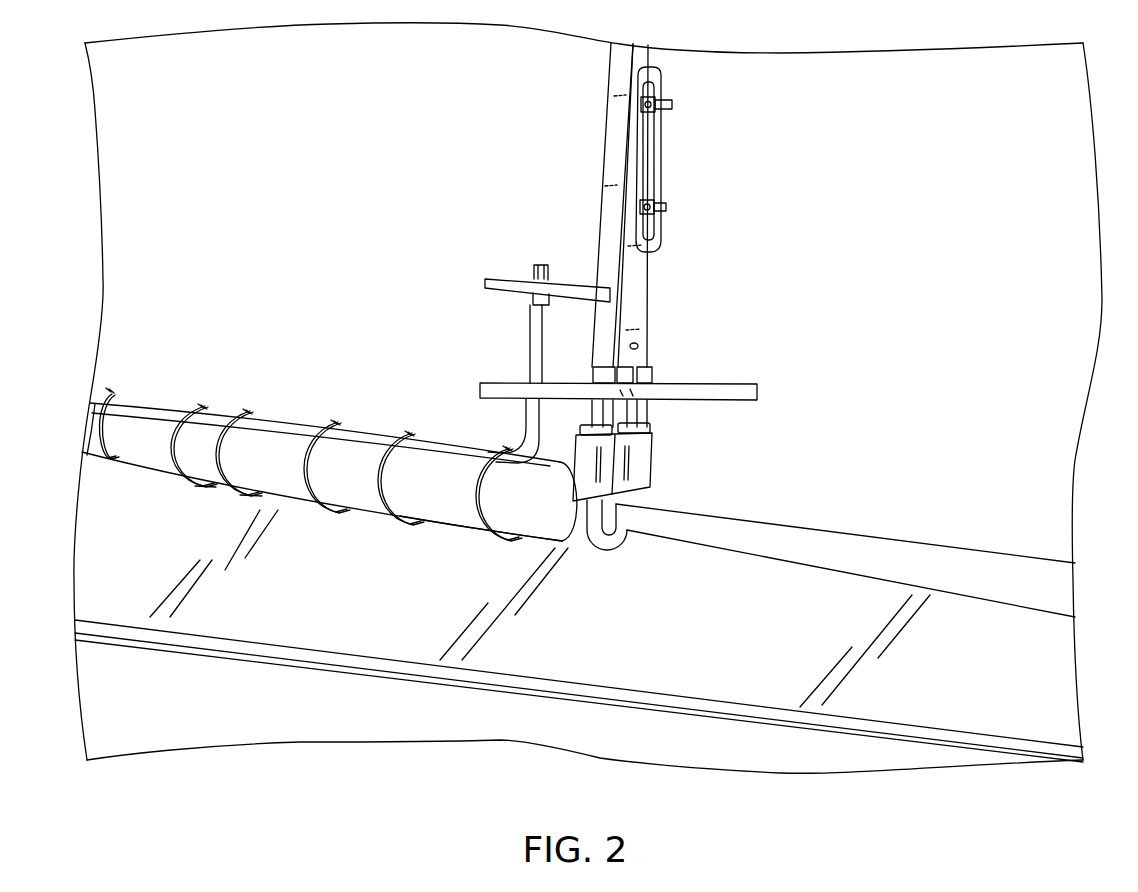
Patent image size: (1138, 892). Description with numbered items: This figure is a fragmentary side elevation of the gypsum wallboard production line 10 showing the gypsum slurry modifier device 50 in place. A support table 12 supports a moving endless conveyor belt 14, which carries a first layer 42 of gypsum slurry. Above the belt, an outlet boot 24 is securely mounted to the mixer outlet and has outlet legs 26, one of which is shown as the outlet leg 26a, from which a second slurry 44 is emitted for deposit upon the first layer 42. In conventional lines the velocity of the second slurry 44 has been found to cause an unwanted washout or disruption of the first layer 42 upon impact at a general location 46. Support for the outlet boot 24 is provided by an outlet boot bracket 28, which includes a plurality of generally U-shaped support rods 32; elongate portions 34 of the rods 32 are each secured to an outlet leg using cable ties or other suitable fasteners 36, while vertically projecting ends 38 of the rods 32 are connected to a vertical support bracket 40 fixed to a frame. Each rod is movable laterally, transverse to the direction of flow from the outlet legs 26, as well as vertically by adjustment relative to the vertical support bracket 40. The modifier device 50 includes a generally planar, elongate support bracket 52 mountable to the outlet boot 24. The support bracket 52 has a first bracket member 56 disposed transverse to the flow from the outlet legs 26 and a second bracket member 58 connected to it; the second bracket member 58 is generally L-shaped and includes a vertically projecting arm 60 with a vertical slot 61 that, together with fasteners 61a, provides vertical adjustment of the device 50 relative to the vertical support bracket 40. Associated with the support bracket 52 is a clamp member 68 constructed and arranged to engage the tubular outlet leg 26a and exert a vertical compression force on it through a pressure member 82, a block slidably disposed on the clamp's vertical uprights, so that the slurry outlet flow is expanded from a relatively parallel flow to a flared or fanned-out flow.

The gypsum wallboard production line 10 is at (838, 196).
The support table 12 is at (272, 744).
The conveyor belt 14 is at (467, 690).
The outlet boot 24 is at (80, 435).
The outlet legs 26 is at (150, 467).
The outlet leg 26a is at (445, 521).
The outlet boot bracket 28 is at (420, 420).
The support rods 32 is at (113, 398).
The elongate portions 34 is at (380, 442).
The fasteners 36 is at (197, 497).
The vertically projecting ends 38 is at (572, 282).
The vertical support bracket 40 is at (607, 138).
The first layer 42 is at (755, 700).
The second slurry 44 is at (837, 538).
The general location 46 is at (1058, 642).
The gypsum slurry modifier device 50 is at (748, 350).
The support bracket 52 is at (548, 392).
The first bracket member 56 is at (488, 380).
The second bracket member 58 is at (653, 230).
The vertically projecting arm 60 is at (653, 70).
The vertical slot 61 is at (652, 157).
The fasteners 61a is at (673, 103).
The clamp member 68 is at (640, 543).
The pressure member 82 is at (583, 500).